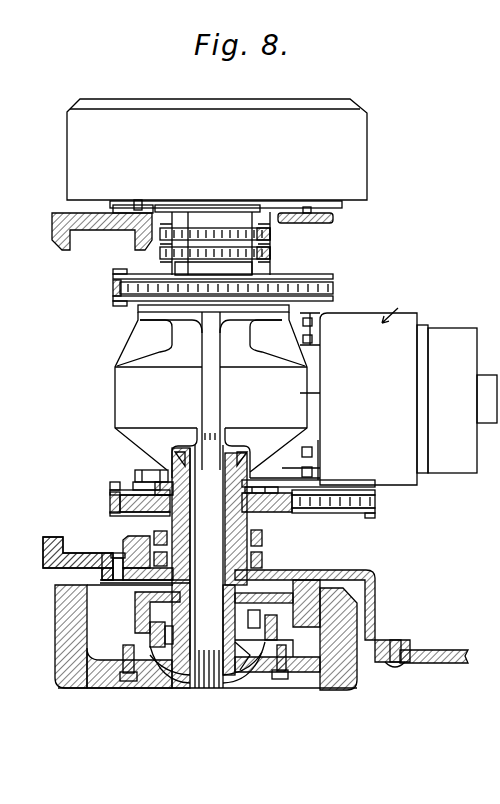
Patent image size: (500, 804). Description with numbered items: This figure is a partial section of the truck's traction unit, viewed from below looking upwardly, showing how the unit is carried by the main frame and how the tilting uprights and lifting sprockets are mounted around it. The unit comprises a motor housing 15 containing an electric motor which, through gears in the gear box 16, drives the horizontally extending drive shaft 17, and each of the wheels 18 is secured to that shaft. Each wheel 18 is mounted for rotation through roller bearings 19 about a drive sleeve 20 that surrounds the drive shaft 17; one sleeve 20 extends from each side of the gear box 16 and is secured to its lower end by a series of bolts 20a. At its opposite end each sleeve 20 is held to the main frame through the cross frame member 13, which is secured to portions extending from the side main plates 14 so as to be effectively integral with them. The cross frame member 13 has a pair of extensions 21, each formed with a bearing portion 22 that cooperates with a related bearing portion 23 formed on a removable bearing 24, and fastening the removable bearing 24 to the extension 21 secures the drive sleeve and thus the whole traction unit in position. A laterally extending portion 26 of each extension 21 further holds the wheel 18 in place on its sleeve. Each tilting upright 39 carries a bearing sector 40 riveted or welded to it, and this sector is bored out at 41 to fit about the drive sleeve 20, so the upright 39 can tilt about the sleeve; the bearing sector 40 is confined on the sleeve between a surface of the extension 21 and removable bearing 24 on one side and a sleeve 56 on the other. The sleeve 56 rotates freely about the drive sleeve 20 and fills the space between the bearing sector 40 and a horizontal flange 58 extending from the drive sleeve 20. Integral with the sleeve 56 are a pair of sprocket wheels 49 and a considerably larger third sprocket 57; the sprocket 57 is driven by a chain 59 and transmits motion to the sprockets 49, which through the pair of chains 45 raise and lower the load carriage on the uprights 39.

The cross frame member 13 is at (385, 608).
The side main plates 14 is at (437, 665).
The motor housing 15 is at (442, 337).
The gear box 16 is at (120, 382).
The drive shaft 17 is at (223, 680).
The wheels 18 is at (360, 126).
The roller bearings 19 is at (240, 670).
The drive sleeves 20 is at (172, 682).
The bolts 20a is at (140, 486).
The extensions 21 is at (330, 222).
The bearing portion 22 is at (250, 598).
The bearing portion 23 is at (135, 604).
The removable bearing 24 is at (150, 624).
The laterally extending portion 26 is at (278, 627).
The uprights 39 is at (54, 232).
The bearing sector 40 is at (138, 202).
The bore 41 is at (126, 560).
The pair of chains 45 is at (177, 232).
The sprocket wheels 49 is at (268, 252).
The sleeve 56 is at (180, 266).
The third sprocket 57 is at (115, 288).
The horizontal flange 58 is at (162, 478).
The chain 59 is at (130, 302).